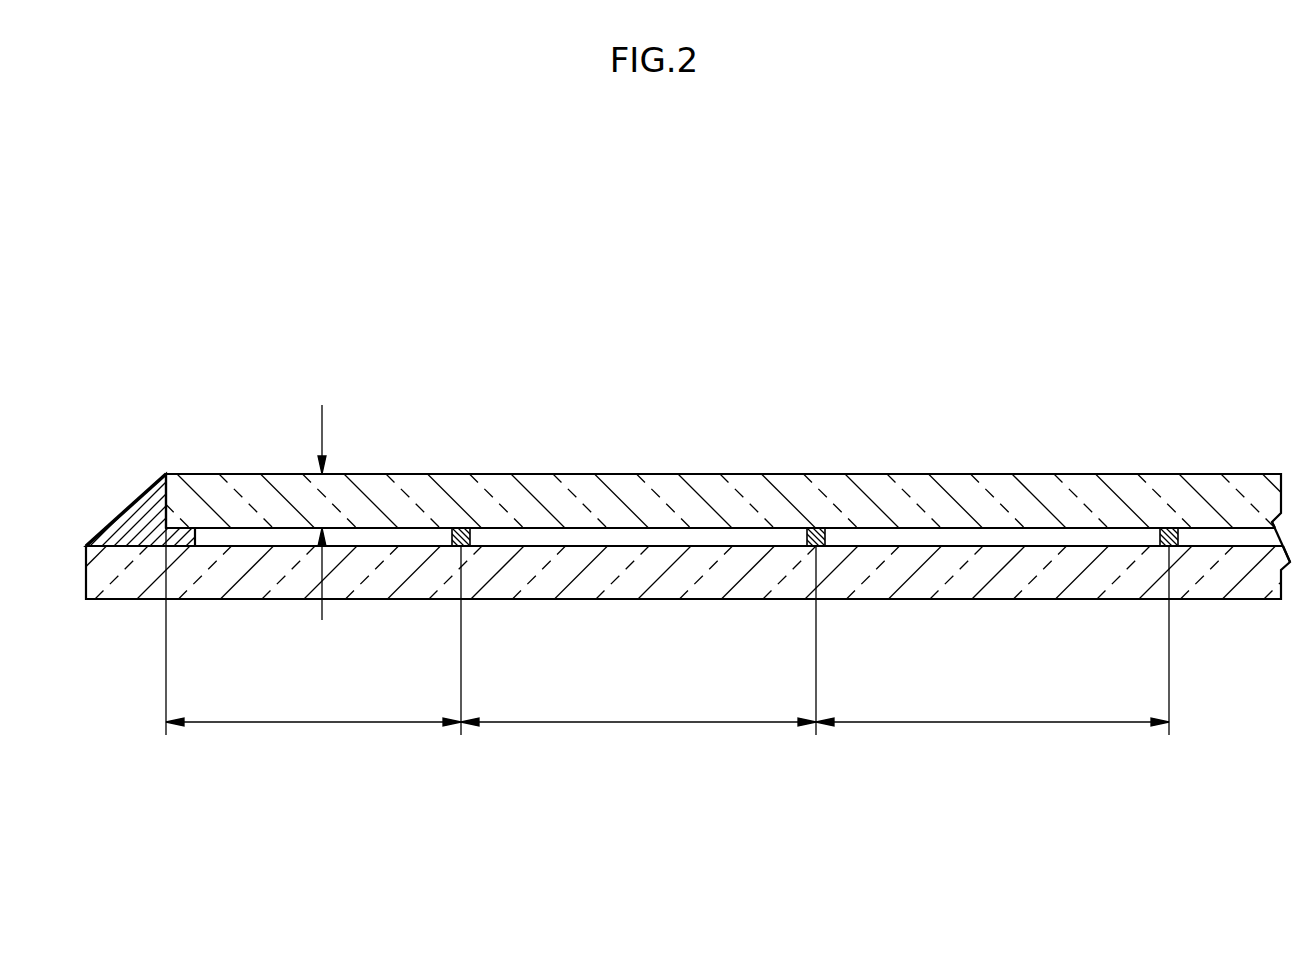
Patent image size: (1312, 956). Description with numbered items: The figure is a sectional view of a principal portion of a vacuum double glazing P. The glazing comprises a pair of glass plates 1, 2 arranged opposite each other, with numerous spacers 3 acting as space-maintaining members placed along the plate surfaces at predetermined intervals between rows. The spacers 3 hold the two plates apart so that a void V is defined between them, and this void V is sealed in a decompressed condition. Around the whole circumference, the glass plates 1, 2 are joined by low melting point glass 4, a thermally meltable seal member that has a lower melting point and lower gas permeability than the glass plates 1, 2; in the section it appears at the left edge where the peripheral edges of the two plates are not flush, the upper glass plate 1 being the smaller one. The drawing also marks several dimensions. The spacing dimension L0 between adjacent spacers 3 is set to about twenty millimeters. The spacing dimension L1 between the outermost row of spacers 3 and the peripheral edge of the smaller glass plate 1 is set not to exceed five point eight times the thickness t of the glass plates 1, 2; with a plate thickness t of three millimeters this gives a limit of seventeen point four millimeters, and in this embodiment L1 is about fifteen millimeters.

The glass plate 1 is at (914, 487).
The glass plate 2 is at (913, 587).
The spacer 3 is at (458, 528).
The low melting point glass 4 is at (136, 508).
The vacuum double glazing P is at (682, 337).
The void V is at (542, 536).
The thickness of the glass plates t is at (322, 509).
The spacing dimension between outermost spacer row and peripheral edge L1 is at (313, 740).
The spacing dimension between spacers L0 is at (815, 740).